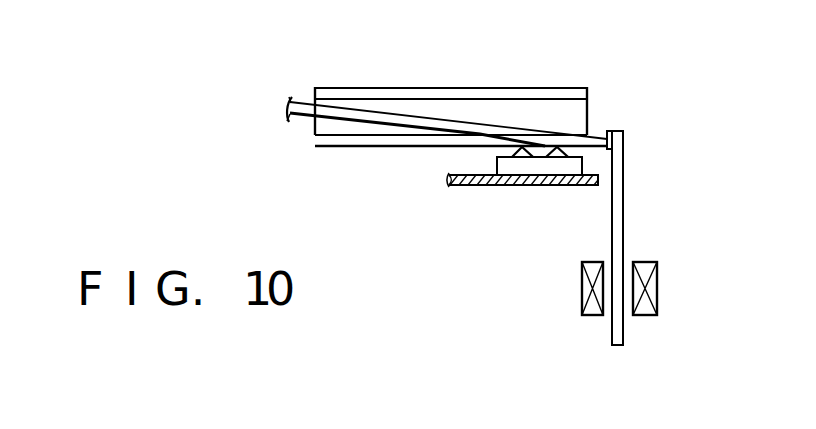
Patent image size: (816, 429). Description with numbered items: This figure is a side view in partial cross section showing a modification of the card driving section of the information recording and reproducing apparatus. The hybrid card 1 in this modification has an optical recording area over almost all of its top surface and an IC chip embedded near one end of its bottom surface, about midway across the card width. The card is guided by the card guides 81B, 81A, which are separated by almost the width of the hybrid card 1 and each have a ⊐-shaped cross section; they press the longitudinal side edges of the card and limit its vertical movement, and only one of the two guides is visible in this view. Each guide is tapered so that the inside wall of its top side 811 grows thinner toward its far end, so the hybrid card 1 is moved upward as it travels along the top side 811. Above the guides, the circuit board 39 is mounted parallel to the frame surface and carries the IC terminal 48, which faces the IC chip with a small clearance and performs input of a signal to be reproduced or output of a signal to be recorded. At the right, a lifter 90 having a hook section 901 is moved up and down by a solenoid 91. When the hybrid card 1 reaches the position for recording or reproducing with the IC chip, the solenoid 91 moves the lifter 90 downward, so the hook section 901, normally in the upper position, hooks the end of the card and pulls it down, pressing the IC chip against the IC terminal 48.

The hybrid card 1 is at (450, 121).
The card guide 81B is at (510, 93).
The card guide 81A is at (451, 111).
The top side 811 is at (483, 144).
The IC terminal 48 is at (537, 163).
The circuit board 39 is at (468, 187).
The lifter 90 is at (618, 195).
The hook section 901 is at (615, 130).
The solenoid 91 is at (652, 292).